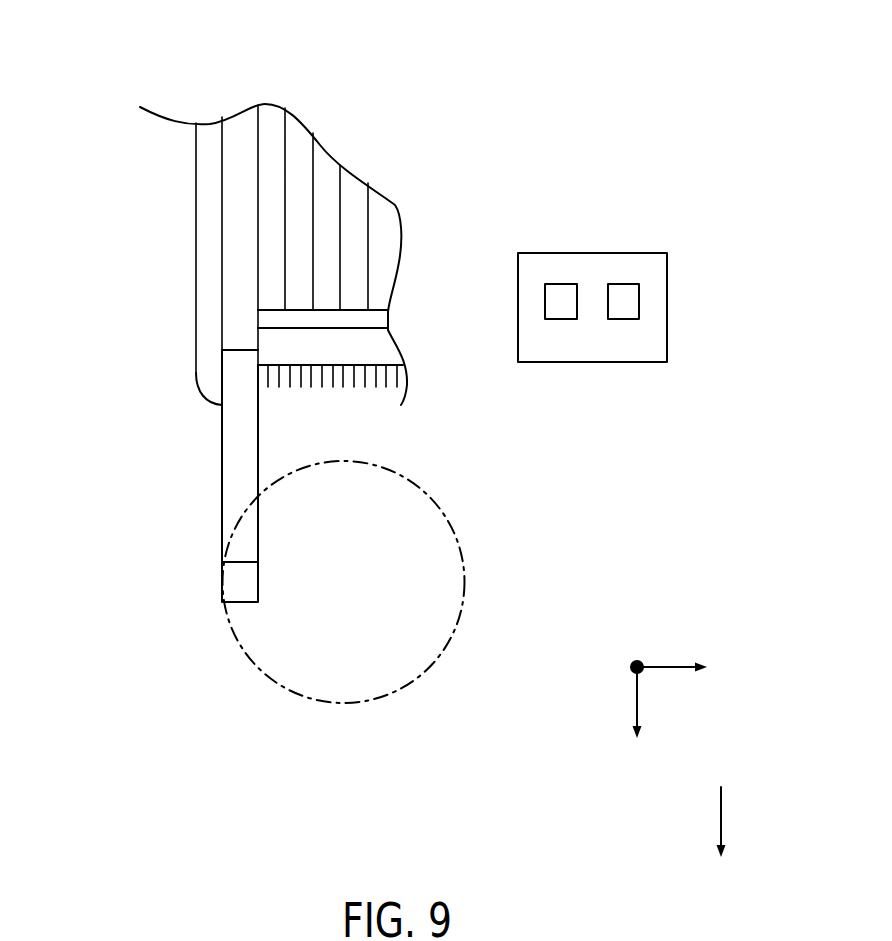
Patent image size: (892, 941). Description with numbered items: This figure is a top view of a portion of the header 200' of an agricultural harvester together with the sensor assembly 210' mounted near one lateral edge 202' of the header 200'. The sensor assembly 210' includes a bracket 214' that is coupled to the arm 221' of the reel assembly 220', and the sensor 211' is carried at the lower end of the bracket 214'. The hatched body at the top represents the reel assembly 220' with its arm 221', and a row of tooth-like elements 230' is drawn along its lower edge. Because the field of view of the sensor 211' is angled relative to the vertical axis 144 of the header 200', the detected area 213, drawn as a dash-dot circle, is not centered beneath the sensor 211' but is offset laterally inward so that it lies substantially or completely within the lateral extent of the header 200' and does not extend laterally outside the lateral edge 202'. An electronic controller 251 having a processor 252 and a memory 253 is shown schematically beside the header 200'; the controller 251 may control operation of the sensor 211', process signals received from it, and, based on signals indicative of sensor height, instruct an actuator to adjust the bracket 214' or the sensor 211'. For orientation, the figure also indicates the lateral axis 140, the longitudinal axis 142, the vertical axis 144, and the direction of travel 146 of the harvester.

The header 200' is at (294, 245).
The reel assembly 220' is at (321, 183).
The arm 221' is at (180, 178).
The lateral edge 202' is at (150, 351).
The teeth 230' is at (367, 413).
The sensor assembly 210' is at (195, 523).
The bracket 214' is at (190, 453).
The sensor 211' is at (292, 586).
The detected area 213 is at (373, 700).
The electronic controller 251 is at (592, 252).
The processor 252 is at (545, 302).
The memory 253 is at (639, 302).
The vertical axis 144 is at (632, 662).
The lateral axis 140 is at (665, 668).
The longitudinal axis 142 is at (637, 695).
The direction of travel 146 is at (721, 815).